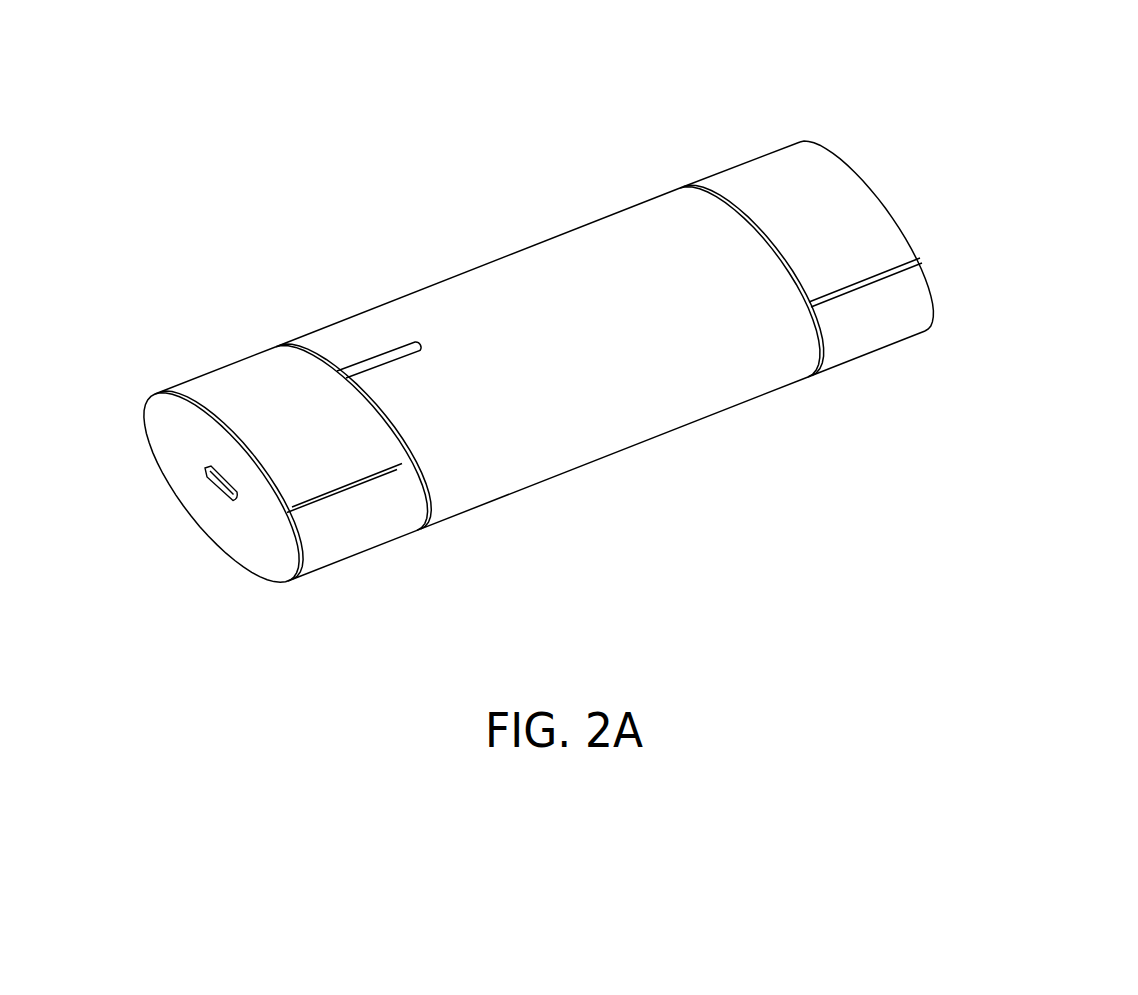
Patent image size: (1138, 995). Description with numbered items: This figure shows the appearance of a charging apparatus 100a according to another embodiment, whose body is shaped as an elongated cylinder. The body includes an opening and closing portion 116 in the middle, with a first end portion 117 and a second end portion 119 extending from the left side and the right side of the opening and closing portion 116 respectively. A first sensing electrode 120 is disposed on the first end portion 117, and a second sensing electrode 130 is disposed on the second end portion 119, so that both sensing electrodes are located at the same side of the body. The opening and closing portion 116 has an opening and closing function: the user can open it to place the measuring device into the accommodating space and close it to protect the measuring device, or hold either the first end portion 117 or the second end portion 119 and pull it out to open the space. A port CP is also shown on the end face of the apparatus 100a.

The charging apparatus 100a is at (998, 610).
The opening and closing portion 116 is at (612, 412).
The first end portion 117 is at (342, 532).
The second end portion 119 is at (882, 312).
The first sensing electrode 120 is at (258, 382).
The second sensing electrode 130 is at (793, 182).
The charging port CP is at (216, 482).